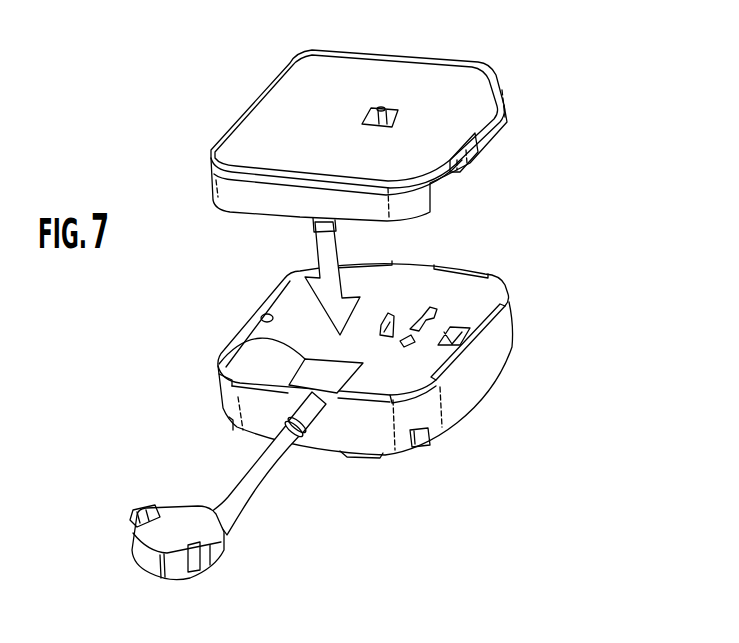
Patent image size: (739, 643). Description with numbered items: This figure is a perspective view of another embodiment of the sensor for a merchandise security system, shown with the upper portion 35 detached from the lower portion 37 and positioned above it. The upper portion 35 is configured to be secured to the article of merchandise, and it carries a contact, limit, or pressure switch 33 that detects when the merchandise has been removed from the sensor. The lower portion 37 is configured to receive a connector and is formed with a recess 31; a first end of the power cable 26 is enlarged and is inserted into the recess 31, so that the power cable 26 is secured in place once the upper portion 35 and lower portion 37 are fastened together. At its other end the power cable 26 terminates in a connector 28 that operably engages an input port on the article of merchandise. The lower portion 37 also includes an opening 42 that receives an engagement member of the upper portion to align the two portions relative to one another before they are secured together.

The power cable 26 is at (250, 485).
The connector 28 is at (145, 562).
The recess 31 is at (258, 333).
The switch 33 is at (381, 106).
The upper portion 35 is at (503, 90).
The lower portion 37 is at (502, 297).
The opening 42 is at (460, 333).